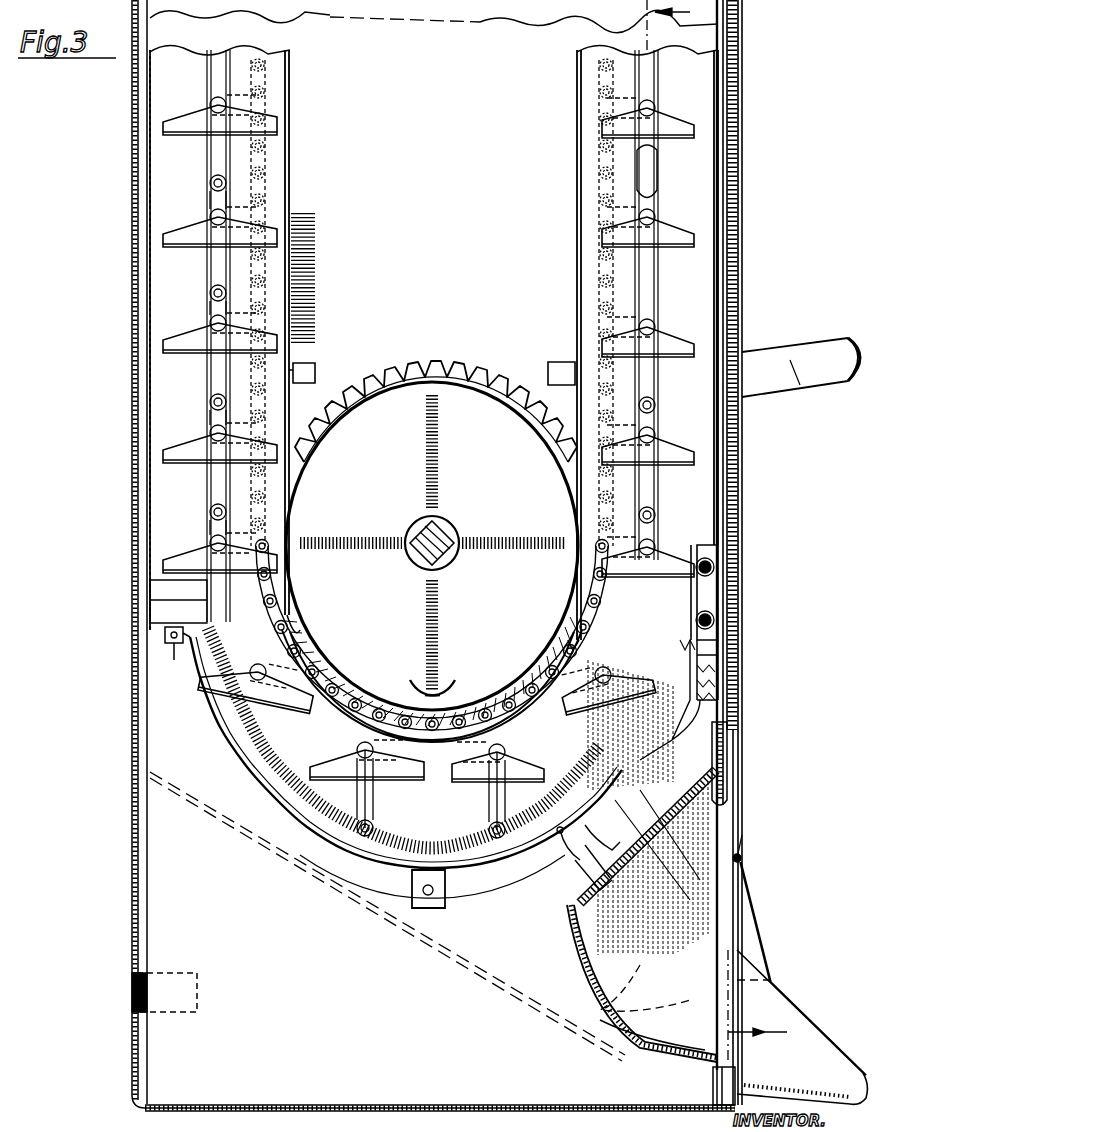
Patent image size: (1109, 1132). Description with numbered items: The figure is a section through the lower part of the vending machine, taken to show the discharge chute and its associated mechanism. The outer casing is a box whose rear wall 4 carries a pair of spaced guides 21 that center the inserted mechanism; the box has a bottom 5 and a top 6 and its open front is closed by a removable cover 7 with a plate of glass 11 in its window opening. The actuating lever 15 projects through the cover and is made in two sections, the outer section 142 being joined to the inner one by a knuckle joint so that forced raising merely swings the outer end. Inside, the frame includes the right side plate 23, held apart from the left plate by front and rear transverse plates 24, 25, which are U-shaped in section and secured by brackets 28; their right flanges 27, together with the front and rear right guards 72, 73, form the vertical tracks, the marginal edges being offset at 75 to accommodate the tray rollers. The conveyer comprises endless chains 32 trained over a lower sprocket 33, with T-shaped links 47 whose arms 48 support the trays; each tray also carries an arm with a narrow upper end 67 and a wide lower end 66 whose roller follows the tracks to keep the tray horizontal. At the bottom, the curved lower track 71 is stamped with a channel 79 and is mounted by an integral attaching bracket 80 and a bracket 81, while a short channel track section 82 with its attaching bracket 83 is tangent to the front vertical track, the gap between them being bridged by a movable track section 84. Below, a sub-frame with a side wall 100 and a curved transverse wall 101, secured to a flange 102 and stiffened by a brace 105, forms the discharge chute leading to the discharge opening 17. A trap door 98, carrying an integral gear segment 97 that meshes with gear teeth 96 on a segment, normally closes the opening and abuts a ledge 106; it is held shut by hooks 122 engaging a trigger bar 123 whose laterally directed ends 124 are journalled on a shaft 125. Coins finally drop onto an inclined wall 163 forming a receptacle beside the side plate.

The rear wall 4 is at (135, 320).
The bottom 5 is at (360, 1104).
The top 6 is at (707, 531).
The removable cover 7 is at (742, 66).
The plate of glass 11 is at (740, 240).
The lever 15 is at (790, 375).
The discharge chute 17 is at (780, 1020).
The guides 21 is at (180, 975).
The right side plate 23 is at (470, 80).
The front transverse plate 24 is at (575, 210).
The rear transverse plate 25 is at (292, 157).
The right flanges 27 is at (575, 50).
The brackets 28 is at (548, 370).
The endless chains 32 is at (325, 700).
The lower sprocket 33 is at (367, 498).
The T shaped links 47 is at (262, 212).
The arms 48 is at (248, 210).
The wide lower end portions 66 is at (207, 596).
The narrow upper end portions 67 is at (205, 570).
The lower track 71 is at (420, 870).
The front right guard 72 is at (685, 186).
The rear right guard 73 is at (165, 158).
The offset 75 is at (212, 78).
The channel 79 is at (300, 840).
The attaching bracket 80 is at (172, 660).
The bracket 81 is at (440, 910).
The short section of channel track 82 is at (722, 645).
The attaching bracket 83 is at (712, 628).
The movable channel track section 84 is at (580, 720).
The gear teeth 96 is at (720, 680).
The gear segment 97 is at (708, 745).
The trap door 98 is at (560, 852).
The side wall 100 is at (620, 985).
The transverse wall 101 is at (570, 930).
The flange 102 is at (620, 965).
The brace 105 is at (730, 785).
The ledge 106 is at (578, 870).
The hooks 122 is at (585, 840).
The trigger bar 123 is at (590, 880).
The laterally directed ends 124 is at (615, 862).
The shaft 125 is at (558, 835).
The outer section 142 is at (815, 380).
The inclined wall 163 is at (430, 950).